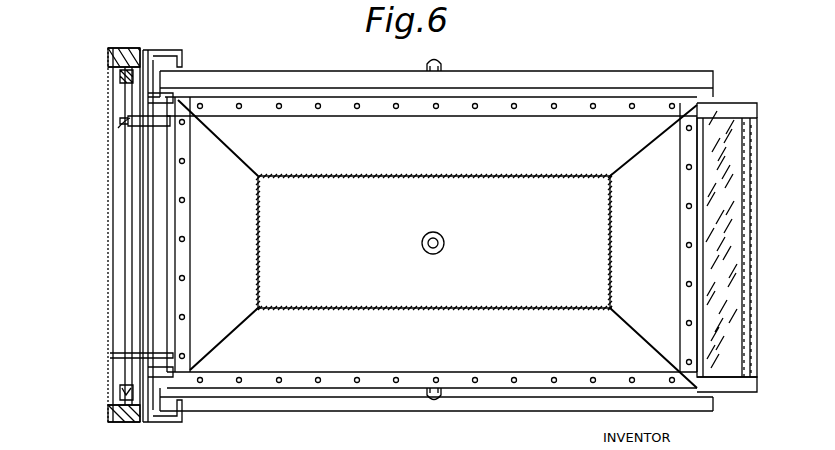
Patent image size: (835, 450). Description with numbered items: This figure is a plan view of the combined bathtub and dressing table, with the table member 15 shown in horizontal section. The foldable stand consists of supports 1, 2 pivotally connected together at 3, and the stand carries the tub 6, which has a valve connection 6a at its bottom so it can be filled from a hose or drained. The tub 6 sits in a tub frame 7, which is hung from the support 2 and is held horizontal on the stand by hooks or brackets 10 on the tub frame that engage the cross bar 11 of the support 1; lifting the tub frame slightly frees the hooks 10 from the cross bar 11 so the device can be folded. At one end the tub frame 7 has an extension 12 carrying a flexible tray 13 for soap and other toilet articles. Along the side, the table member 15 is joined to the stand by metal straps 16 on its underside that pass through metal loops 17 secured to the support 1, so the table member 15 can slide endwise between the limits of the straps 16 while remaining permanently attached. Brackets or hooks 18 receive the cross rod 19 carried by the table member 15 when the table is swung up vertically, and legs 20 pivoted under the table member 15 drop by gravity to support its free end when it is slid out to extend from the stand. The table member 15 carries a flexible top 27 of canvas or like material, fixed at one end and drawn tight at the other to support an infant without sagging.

The support 1 is at (300, 50).
The support 2 is at (345, 92).
The pivotal connection 3 is at (444, 67).
The tub 6 is at (437, 244).
The valve connection 6a is at (443, 237).
The tub frame 7 is at (377, 380).
The hooks 10 is at (158, 97).
The cross bar 11 is at (212, 201).
The extension 12 is at (290, 122).
The flexible tray 13 is at (128, 110).
The table member 15 is at (133, 50).
The straps 16 is at (160, 58).
The metal loops 17 is at (170, 54).
The brackets or hooks 18 is at (118, 128).
The cross rod 19 is at (127, 255).
The legs 20 is at (110, 76).
The flexible top 27 is at (108, 194).